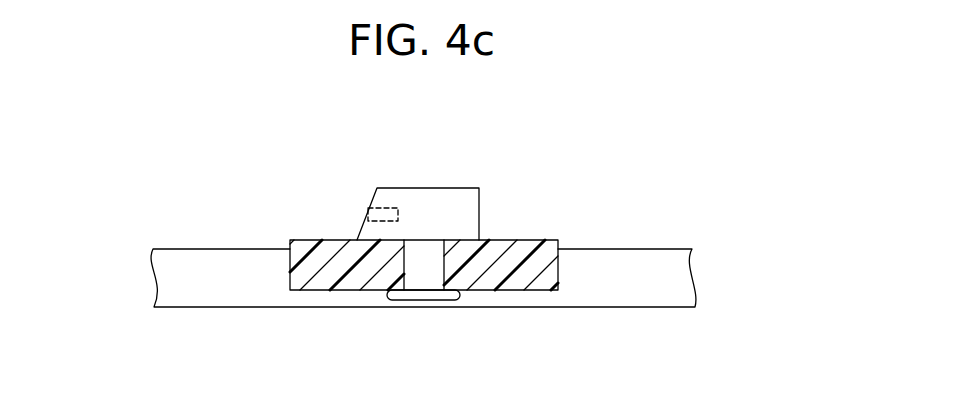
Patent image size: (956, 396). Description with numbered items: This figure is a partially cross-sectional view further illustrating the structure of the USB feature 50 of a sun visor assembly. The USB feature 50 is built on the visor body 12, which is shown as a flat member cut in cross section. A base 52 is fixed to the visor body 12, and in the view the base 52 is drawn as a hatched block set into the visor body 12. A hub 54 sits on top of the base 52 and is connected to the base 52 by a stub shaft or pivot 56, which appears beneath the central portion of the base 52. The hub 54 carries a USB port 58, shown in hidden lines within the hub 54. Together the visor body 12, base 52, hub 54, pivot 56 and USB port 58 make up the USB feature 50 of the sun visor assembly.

The visor body 12 is at (640, 299).
The USB feature 50 is at (443, 244).
The base 52 is at (520, 253).
The hub 54 is at (398, 195).
The stub shaft or pivot 56 is at (423, 272).
The USB port 58 is at (367, 217).